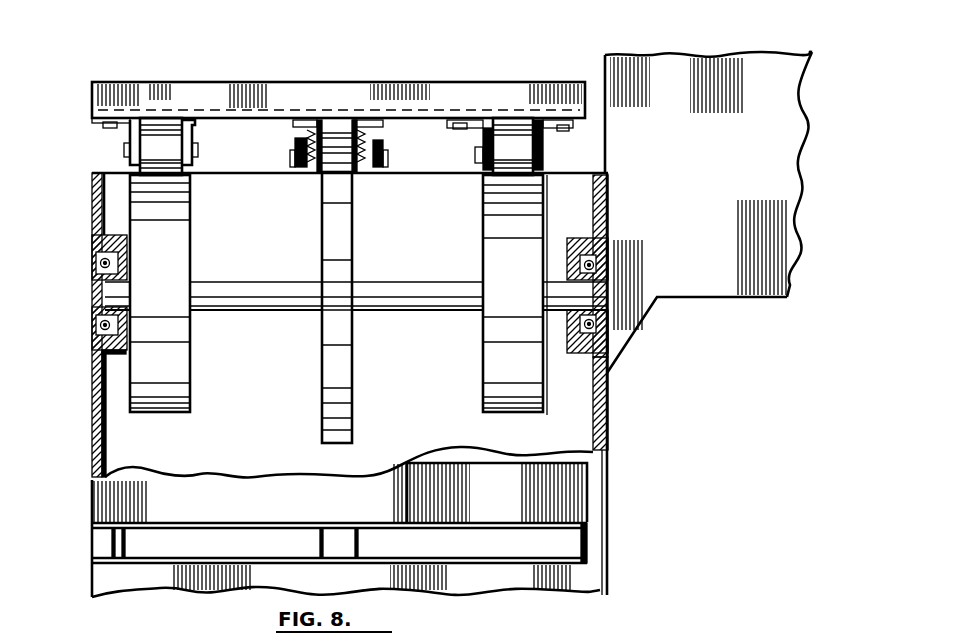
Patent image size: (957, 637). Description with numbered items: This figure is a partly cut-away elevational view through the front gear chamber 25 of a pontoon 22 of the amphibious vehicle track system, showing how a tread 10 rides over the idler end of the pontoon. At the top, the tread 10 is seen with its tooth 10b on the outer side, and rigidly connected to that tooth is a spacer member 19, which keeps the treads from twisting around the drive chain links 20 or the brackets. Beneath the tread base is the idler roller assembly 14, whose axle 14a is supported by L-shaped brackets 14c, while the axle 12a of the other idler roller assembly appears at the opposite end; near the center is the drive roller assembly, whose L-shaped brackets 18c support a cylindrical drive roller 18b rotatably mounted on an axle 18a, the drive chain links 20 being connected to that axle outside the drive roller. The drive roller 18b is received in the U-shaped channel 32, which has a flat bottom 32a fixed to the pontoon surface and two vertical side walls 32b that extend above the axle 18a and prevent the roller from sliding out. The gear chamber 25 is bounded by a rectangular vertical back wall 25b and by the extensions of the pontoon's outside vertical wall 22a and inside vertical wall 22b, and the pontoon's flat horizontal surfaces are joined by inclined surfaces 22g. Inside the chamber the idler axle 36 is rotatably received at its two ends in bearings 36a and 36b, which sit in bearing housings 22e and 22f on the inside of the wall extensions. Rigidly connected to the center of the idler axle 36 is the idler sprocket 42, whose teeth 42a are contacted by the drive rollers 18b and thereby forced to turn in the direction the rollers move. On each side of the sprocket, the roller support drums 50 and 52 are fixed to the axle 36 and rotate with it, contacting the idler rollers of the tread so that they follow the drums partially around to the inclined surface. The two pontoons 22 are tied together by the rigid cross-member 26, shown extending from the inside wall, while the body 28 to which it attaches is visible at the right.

The tread 10 is at (318, 72).
The tooth 10b is at (470, 92).
The axle 12a is at (478, 147).
The idler roller assembly 14 is at (88, 149).
The axle 14a is at (198, 150).
The L-shaped bracket 14c is at (98, 124).
The axle 18a is at (366, 138).
The drive roller 18b is at (335, 148).
The L-shaped bracket 18c is at (307, 118).
The spacer member 19 is at (113, 100).
The drive chain link 20 is at (318, 546).
The pontoon 22 is at (84, 389).
The outside vertical wall 22a is at (105, 456).
The inside vertical wall 22b is at (592, 428).
The bearing housing 22e is at (112, 237).
The bearing housing 22f is at (582, 238).
The inclined surface 22g is at (612, 585).
The gear chamber 25 is at (254, 182).
The vertical back wall 25b is at (440, 240).
The cross-member 26 is at (698, 308).
The support body 28 is at (796, 92).
The U-shaped channel 32 is at (391, 146).
The flat bottom 32a is at (307, 140).
The side wall 32b is at (296, 140).
The idler axle 36 is at (262, 268).
The bearing 36a is at (93, 264).
The bearing 36b is at (595, 266).
The idler sprocket 42 is at (309, 366).
The tooth 42a is at (343, 207).
The roller support drum 50 is at (203, 370).
The roller support drum 52 is at (470, 382).